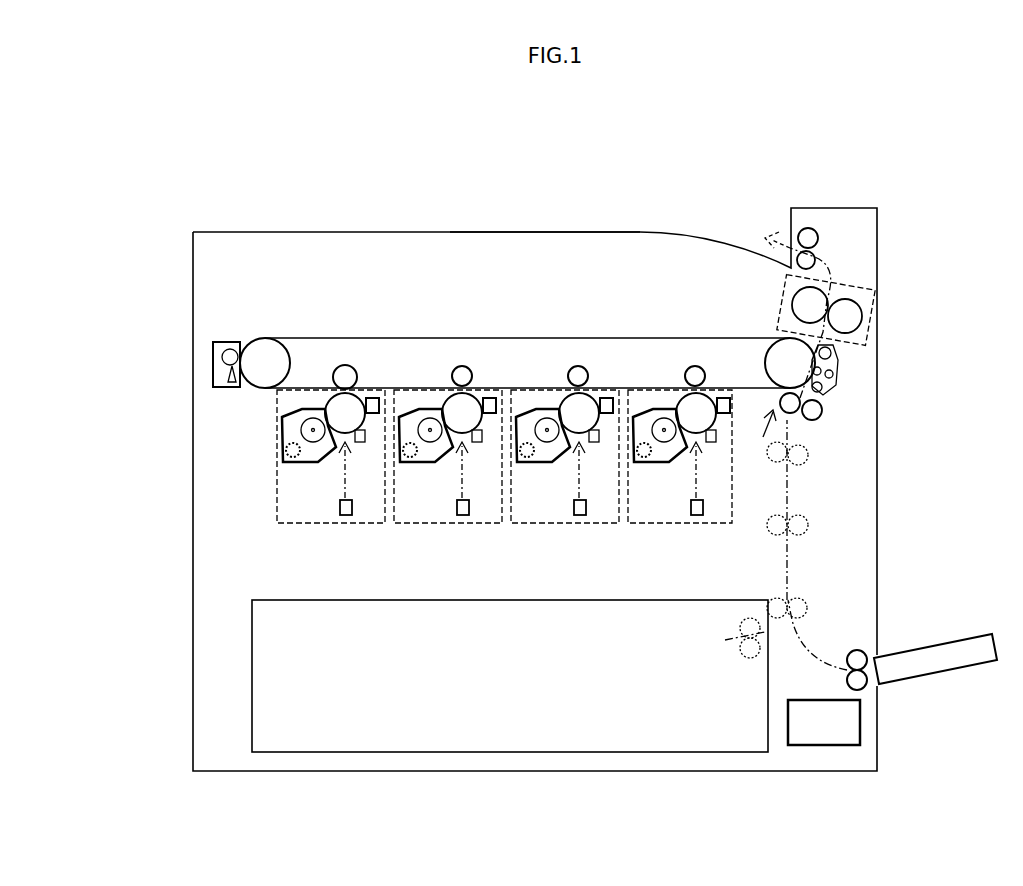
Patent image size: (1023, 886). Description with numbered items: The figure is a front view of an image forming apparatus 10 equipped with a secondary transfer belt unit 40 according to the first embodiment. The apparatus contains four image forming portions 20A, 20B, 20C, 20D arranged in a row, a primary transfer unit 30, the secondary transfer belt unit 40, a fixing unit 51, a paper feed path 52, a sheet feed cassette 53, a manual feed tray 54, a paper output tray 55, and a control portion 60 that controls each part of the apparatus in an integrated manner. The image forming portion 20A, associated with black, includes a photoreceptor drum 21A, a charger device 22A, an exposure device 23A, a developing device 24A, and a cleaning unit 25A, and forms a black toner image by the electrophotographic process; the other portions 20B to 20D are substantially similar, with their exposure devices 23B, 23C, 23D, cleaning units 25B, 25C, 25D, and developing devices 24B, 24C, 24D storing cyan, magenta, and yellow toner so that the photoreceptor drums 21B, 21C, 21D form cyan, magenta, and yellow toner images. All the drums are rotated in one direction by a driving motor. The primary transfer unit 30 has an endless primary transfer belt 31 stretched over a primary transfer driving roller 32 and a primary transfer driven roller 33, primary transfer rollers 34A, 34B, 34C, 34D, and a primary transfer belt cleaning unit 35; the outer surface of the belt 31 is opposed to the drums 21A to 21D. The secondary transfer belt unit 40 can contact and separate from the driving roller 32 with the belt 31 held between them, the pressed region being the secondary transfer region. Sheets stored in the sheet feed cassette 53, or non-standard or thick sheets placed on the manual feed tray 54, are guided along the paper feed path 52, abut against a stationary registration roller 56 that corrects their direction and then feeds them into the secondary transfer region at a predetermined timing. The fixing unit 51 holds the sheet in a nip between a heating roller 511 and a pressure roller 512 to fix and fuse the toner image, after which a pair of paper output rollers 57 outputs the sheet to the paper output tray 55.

The image forming apparatus 10 is at (211, 133).
The image forming portion 20A is at (701, 469).
The image forming portion 20B is at (568, 474).
The image forming portion 20C is at (450, 472).
The image forming portion 20D is at (333, 471).
The photoreceptor drum 21A is at (727, 446).
The photoreceptor drum 21B is at (591, 479).
The photoreceptor drum 21C is at (474, 479).
The photoreceptor drum 21D is at (362, 427).
The charger device 22A is at (732, 493).
The exposure device 23A is at (717, 513).
The exposure device 23B is at (588, 518).
The exposure device 23C is at (471, 518).
The exposure device 23D is at (347, 515).
The developing device 24A is at (655, 483).
The developing device 24B is at (537, 483).
The developing device 24C is at (420, 483).
The developing device 24D is at (288, 466).
The cleaning unit 25A is at (730, 383).
The cleaning unit 25B is at (612, 383).
The cleaning unit 25C is at (492, 382).
The cleaning unit 25D is at (372, 398).
The primary transfer unit 30 is at (603, 333).
The primary transfer belt 31 is at (633, 337).
The primary transfer driving roller 32 is at (766, 346).
The primary transfer driven roller 33 is at (259, 338).
The primary transfer roller 34A is at (694, 366).
The primary transfer roller 34B is at (578, 366).
The primary transfer roller 34C is at (461, 366).
The primary transfer roller 34D is at (343, 365).
The primary transfer belt cleaning unit 35 is at (215, 362).
The secondary transfer belt unit 40 is at (838, 365).
The fixing unit 51 is at (872, 293).
The heating roller 511 is at (798, 298).
The pressure roller 512 is at (860, 318).
The paper feed path 52 is at (787, 495).
The sheet feed cassette 53 is at (665, 740).
The manual feed tray 54 is at (930, 652).
The paper output tray 55 is at (518, 230).
The registration roller 56 is at (820, 420).
The paper output rollers 57 is at (807, 227).
The control portion 60 is at (855, 727).